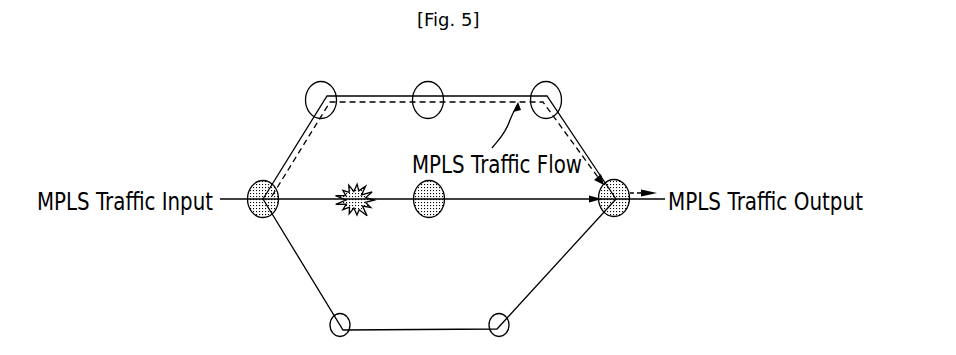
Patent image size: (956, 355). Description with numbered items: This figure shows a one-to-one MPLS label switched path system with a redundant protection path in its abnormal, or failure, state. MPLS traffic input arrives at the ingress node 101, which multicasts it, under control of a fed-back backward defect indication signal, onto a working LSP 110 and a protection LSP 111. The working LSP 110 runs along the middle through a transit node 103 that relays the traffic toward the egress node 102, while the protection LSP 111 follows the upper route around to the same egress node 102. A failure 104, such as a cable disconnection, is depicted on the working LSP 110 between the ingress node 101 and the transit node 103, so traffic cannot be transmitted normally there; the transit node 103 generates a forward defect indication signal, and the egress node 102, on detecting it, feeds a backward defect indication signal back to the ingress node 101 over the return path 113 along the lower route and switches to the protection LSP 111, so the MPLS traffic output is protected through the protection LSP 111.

The ingress node 101 is at (262, 217).
The egress node 102 is at (628, 182).
The transit node 103 is at (441, 211).
The failure 104 is at (364, 183).
The working LSP 110 is at (513, 207).
The protection LSP 111 is at (590, 127).
The return path 113 is at (573, 279).